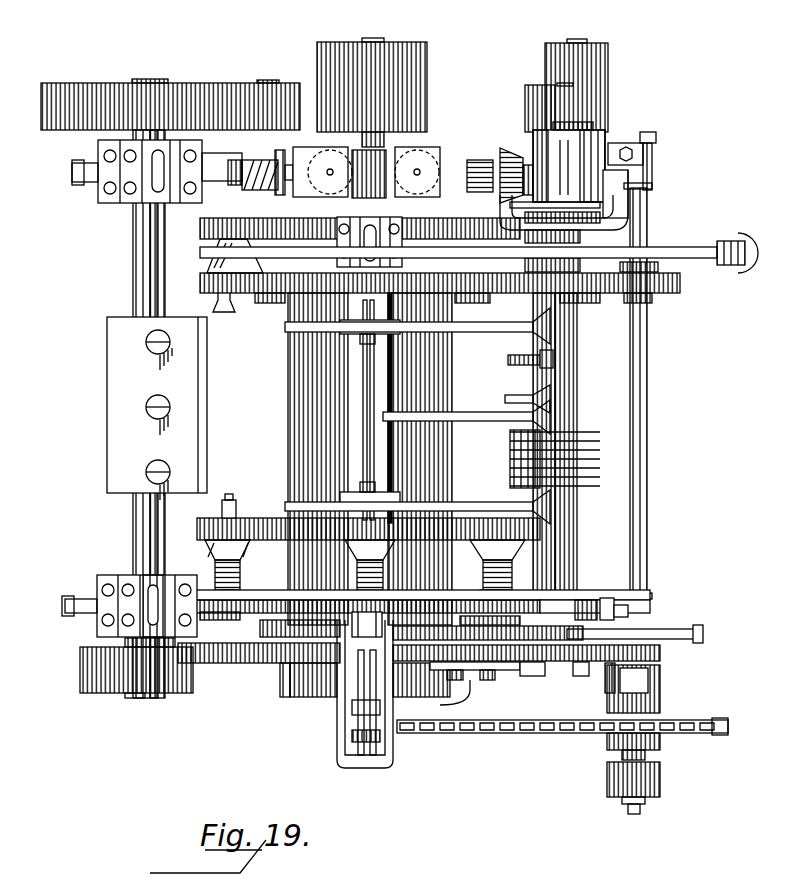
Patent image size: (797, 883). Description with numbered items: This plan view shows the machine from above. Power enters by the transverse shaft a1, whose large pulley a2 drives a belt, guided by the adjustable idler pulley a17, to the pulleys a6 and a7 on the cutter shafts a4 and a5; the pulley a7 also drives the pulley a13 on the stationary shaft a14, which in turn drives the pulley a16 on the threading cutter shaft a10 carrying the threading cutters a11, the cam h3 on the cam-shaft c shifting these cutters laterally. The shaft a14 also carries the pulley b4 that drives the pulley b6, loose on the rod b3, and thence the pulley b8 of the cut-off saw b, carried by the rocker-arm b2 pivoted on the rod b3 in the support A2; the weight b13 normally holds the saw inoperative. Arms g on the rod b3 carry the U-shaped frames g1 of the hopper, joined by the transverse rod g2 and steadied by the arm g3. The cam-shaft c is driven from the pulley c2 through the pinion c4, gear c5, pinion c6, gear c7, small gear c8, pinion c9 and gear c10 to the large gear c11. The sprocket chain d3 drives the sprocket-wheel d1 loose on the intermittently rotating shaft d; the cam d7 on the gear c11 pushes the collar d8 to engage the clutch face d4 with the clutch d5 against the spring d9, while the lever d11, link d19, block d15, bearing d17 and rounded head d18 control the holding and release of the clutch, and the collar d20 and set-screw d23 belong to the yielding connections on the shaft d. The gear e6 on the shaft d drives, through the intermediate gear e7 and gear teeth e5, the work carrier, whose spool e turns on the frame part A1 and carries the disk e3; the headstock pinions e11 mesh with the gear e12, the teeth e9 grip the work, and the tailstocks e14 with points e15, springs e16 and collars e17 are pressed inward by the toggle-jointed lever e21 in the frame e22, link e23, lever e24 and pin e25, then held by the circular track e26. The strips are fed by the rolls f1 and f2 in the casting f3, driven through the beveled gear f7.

The large pulley a2 is at (86, 696).
The pulley a6 is at (194, 90).
The adjustable idler pulley a17 is at (282, 92).
The transverse shaft a1 is at (152, 697).
The cutter shaft a4 is at (162, 520).
The feed roll f2 is at (320, 197).
The feed roll f1 is at (422, 197).
The supporting casting f3 is at (475, 158).
The beveled gear f7 is at (505, 155).
The pulley b8 is at (528, 165).
The pulley a7 is at (428, 87).
The cutter shaft a5 is at (376, 42).
The pulley a13 is at (600, 80).
The stationary shaft a14 is at (576, 536).
The threading cutter shaft a10 is at (548, 82).
The pulley a16 is at (527, 100).
The pulley b6 is at (540, 142).
The pulley b4 is at (612, 142).
The collar d20 is at (648, 152).
The link d19 is at (652, 165).
The support A2 is at (650, 596).
The intermittently rotating shaft d is at (648, 413).
The pinions e11 is at (256, 222).
The gear e12 is at (293, 236).
The rocker-arm b2 is at (684, 258).
The weight b13 is at (740, 274).
The gear e6 is at (681, 286).
The biting projections or teeth e9 is at (228, 312).
The gear teeth e5 is at (470, 296).
The intermediate gear e7 is at (590, 302).
The spool e is at (447, 470).
The cut-off saw b is at (290, 328).
The U-shaped side frames g1 is at (370, 492).
The transverse rod g2 is at (396, 394).
The projecting arms g is at (498, 504).
The arm g3 is at (482, 420).
The cam-shaft c is at (535, 400).
The cam h3 is at (512, 365).
The rod b3 is at (572, 385).
The threading cutters a11 is at (598, 464).
The disk e3 is at (266, 520).
The point e15 is at (233, 510).
The spring e16 is at (255, 565).
The circular track e26 is at (210, 592).
The tailstocks e14 is at (490, 562).
The small gear c8 is at (482, 590).
The frame part A1 is at (278, 600).
The collar e17 is at (370, 614).
The rounded head d18 is at (582, 598).
The pinion c9 is at (605, 598).
The small block d15 is at (620, 605).
The bearing d17 is at (655, 612).
The lever d11 is at (705, 630).
The pinion c6 is at (262, 632).
The pinion c4 is at (386, 655).
The gear c5 is at (264, 652).
The large gear c11 is at (660, 652).
The gear c7 is at (286, 662).
The pulley c2 is at (322, 698).
The toggle-jointed lever e21 is at (356, 720).
The frame e22 is at (348, 760).
The pivoted lever e24 is at (528, 662).
The pin e25 is at (497, 688).
The link e23 is at (442, 705).
The gear c10 is at (583, 663).
The cam d7 is at (606, 690).
The collar d8 is at (662, 690).
The sprocket-chain d3 is at (446, 733).
The sprocket-wheel d1 is at (720, 722).
The clutch face d4 is at (664, 742).
The spring d9 is at (620, 756).
The clutch d5 is at (664, 786).
The set-screw d23 is at (642, 812).